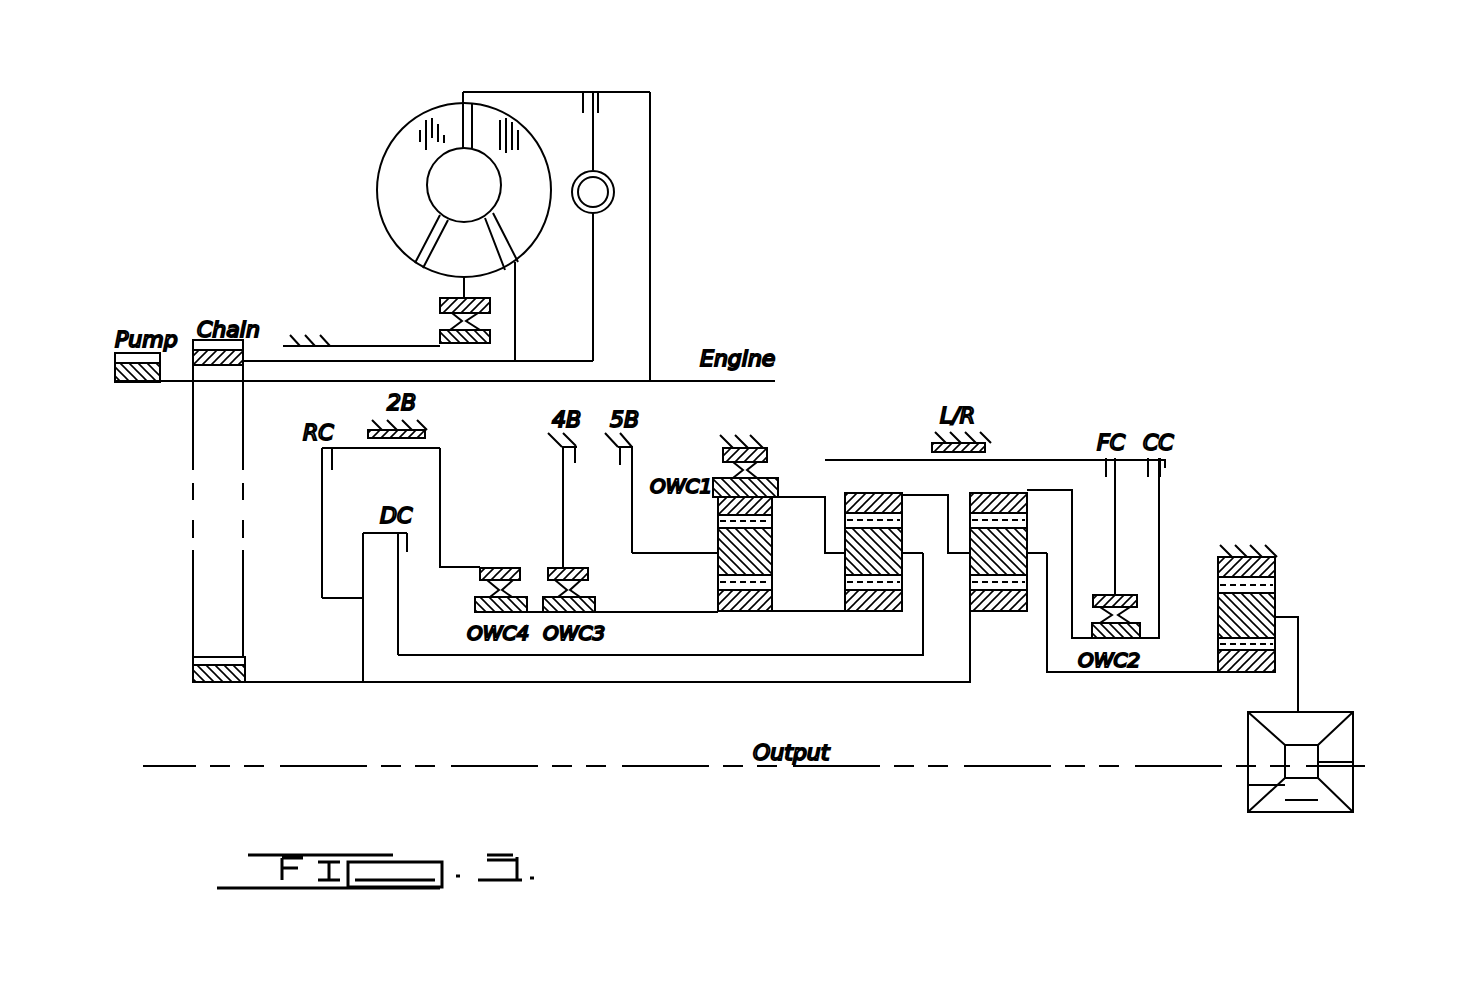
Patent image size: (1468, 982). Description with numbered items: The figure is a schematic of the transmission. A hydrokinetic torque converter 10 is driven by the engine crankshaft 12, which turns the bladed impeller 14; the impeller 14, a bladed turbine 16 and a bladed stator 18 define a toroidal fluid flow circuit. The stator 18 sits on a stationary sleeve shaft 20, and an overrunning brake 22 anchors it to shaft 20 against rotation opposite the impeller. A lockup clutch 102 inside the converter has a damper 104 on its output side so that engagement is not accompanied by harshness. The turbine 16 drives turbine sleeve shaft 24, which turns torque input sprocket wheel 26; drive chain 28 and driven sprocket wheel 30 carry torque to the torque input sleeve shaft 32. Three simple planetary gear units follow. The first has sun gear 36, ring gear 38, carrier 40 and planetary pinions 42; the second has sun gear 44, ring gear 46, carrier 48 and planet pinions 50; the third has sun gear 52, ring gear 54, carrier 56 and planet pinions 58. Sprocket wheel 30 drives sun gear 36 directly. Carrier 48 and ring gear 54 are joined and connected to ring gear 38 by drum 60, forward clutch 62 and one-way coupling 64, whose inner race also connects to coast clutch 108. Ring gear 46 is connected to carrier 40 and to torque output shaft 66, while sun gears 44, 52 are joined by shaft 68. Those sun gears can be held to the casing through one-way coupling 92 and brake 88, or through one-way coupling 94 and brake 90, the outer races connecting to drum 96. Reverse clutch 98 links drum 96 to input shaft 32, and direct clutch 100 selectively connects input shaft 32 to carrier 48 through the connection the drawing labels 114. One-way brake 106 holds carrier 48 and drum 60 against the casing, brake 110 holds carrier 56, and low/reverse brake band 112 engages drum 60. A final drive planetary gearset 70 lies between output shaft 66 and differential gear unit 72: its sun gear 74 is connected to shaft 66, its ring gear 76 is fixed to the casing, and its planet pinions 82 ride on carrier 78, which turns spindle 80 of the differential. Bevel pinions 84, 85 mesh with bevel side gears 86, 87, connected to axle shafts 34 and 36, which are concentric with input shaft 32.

The hydrokinetic torque converter 10 is at (337, 160).
The crankshaft 12 is at (680, 378).
The bladed impeller 14 is at (412, 212).
The bladed turbine 16 is at (532, 207).
The bladed stator 18 is at (477, 267).
The stationary sleeve shaft 20 is at (347, 346).
The overrunning brake 22 is at (450, 321).
The turbine sleeve shaft 24 is at (548, 361).
The torque input sprocket wheel 26 is at (207, 355).
The drive chain 28 is at (202, 523).
The driven sprocket wheel 30 is at (193, 670).
The torque input sleeve shaft 32 is at (297, 683).
The axle shaft 34 is at (985, 767).
The sun gear 36 is at (993, 612).
The ring gear 38 is at (983, 498).
The carrier 40 is at (1033, 547).
The planetary pinions 42 is at (980, 553).
The sun gear 44 is at (890, 608).
The ring gear 46 is at (872, 500).
The carrier 48 is at (832, 557).
The planet pinions 50 is at (890, 543).
The sun gear 52 is at (758, 607).
The ring gear 54 is at (720, 503).
The carrier 56 is at (675, 557).
The planet pinions 58 is at (718, 543).
The drum 60 is at (863, 460).
The forward clutch 62 is at (1105, 472).
The one-way coupling 64 is at (1110, 593).
The torque output shaft 66 is at (1077, 675).
The shaft 68 is at (657, 613).
The final drive planetary gearset 70 is at (1245, 527).
The differential gear unit 72 is at (1252, 818).
The sun gear 74 is at (1253, 667).
The ring gear 76 is at (1273, 565).
The carrier 78 is at (1297, 610).
The spindle 80 is at (1300, 652).
The planet pinions 82 is at (1225, 607).
The bevel pinion 84 is at (1322, 722).
The bevel pinion 85 is at (1312, 800).
The bevel side gear 86 is at (1258, 785).
The bevel side gear 87 is at (1340, 740).
The brake 88 is at (562, 458).
The brake 90 is at (423, 432).
The one-way coupling 92 is at (568, 575).
The one-way coupling 94 is at (502, 575).
The drum 96 is at (440, 448).
The reverse clutch 98 is at (322, 462).
The direct clutch 100 is at (395, 538).
The lockup clutch 102 is at (603, 107).
The damper 104 is at (612, 200).
The one-way brake 106 is at (757, 447).
The coast clutch 108 is at (1170, 468).
The brake 110 is at (637, 452).
The low/reverse brake band 112 is at (985, 445).
The direct clutch shaft 114 is at (563, 655).